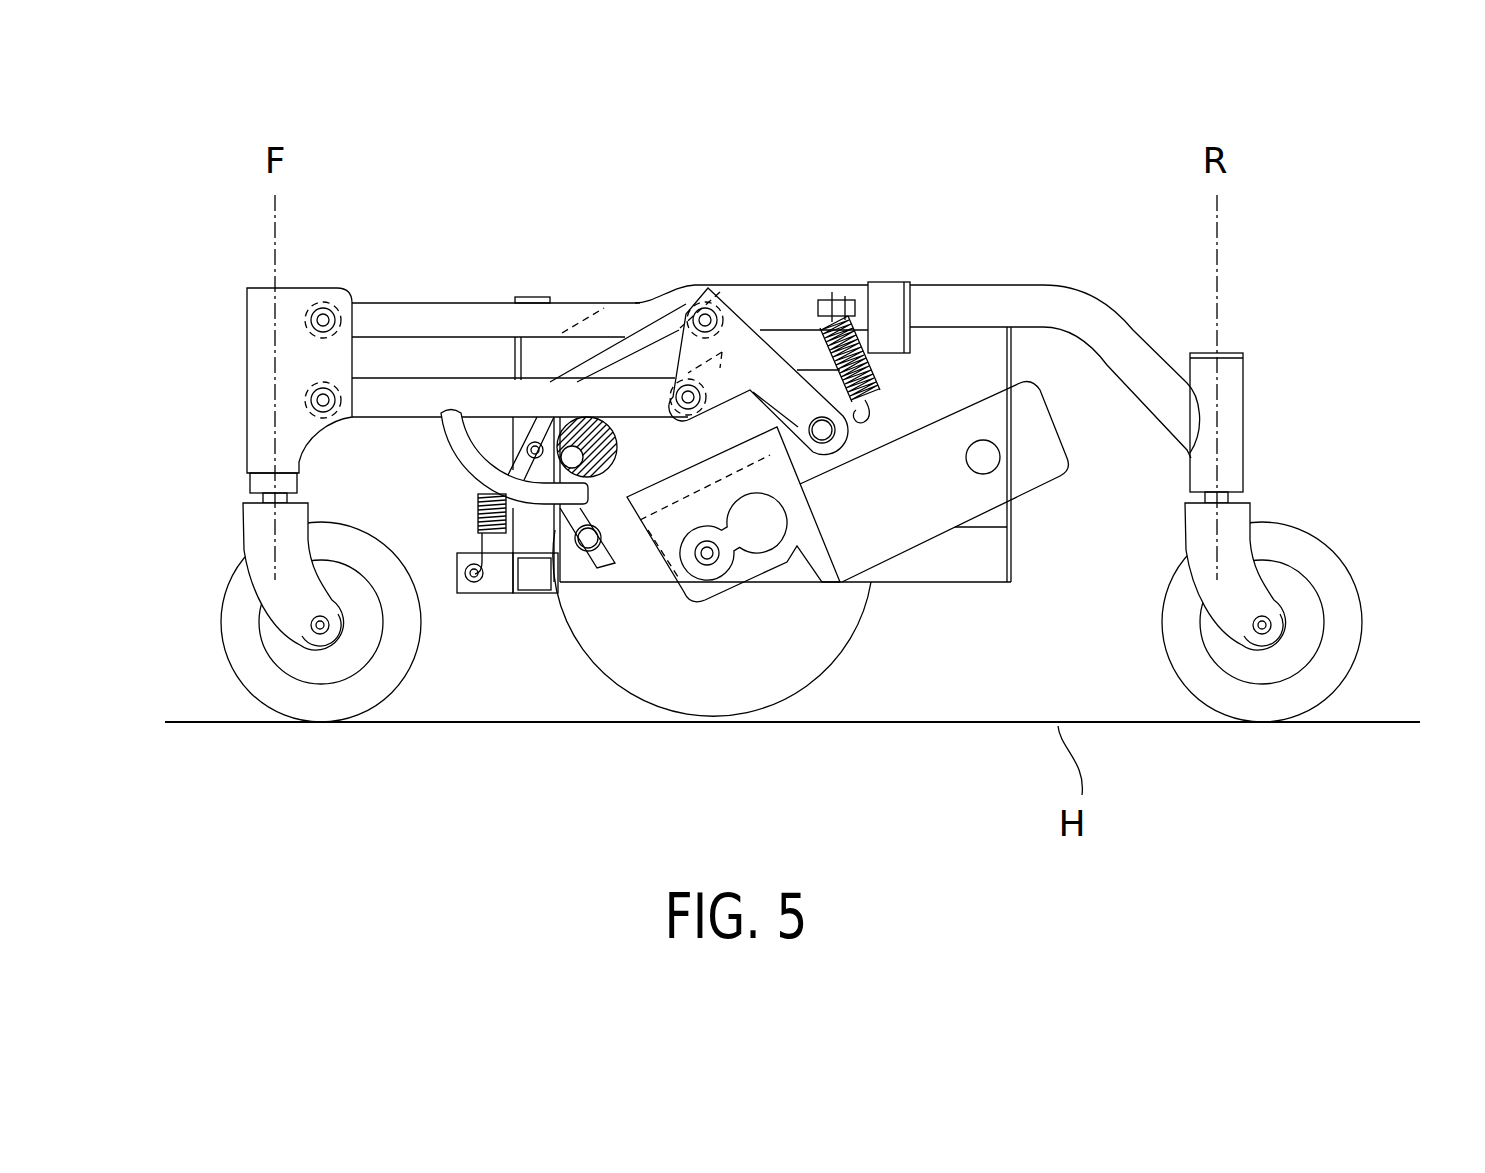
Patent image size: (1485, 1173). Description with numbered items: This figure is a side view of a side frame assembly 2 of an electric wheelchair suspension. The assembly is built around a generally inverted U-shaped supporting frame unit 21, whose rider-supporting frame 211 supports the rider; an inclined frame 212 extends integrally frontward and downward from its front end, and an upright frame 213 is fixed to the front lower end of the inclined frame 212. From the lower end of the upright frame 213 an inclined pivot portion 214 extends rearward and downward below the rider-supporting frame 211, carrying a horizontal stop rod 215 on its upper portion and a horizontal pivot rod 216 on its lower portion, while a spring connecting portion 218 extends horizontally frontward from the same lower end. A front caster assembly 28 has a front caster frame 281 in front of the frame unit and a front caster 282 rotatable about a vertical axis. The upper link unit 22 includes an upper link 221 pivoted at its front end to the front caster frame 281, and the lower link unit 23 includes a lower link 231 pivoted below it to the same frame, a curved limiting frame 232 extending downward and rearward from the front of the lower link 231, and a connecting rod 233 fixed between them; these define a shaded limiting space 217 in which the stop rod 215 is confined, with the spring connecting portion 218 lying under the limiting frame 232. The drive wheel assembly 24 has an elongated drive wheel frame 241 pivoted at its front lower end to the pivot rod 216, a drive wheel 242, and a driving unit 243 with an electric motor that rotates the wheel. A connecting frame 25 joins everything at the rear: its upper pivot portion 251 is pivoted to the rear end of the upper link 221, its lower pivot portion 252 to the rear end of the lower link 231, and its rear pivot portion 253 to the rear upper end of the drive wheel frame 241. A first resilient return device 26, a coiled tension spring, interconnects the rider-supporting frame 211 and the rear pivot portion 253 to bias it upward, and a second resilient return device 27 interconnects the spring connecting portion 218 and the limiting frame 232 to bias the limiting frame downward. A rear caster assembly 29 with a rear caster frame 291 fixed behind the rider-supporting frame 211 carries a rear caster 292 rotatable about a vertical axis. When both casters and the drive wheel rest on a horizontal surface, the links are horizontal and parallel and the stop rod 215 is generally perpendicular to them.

The side frame assembly 2 is at (1078, 242).
The supporting frame unit 21 is at (990, 272).
The rider-supporting frame 211 is at (803, 298).
The inclined frame 212 is at (600, 340).
The upright frame 213 is at (517, 433).
The inclined pivot portion 214 is at (540, 485).
The horizontal stop rod 215 is at (612, 456).
The horizontal pivot rod 216 is at (618, 578).
The limiting space 217 is at (592, 552).
The spring connecting portion 218 is at (500, 595).
The upper link unit 22 is at (393, 284).
The upper link 221 is at (412, 310).
The lower link unit 23 is at (376, 434).
The lower link 231 is at (376, 392).
The curved limiting frame 232 is at (470, 465).
The connecting rod 233 is at (527, 512).
The drive wheel assembly 24 is at (834, 697).
The drive wheel frame 241 is at (691, 604).
The drive wheel 242 is at (748, 716).
The driving unit 243 is at (912, 557).
The connecting frame 25 is at (878, 437).
The upper pivot portion 251 is at (830, 420).
The lower pivot portion 252 is at (722, 352).
The rear pivot portion 253 is at (822, 415).
The first resilient return device 26 is at (878, 326).
The second resilient return device 27 is at (496, 560).
The front caster assembly 28 is at (225, 300).
The front caster frame 281 is at (256, 288).
The front caster 282 is at (290, 724).
The rear caster assembly 29 is at (1276, 336).
The rear caster frame 291 is at (1233, 387).
The rear caster 292 is at (1350, 607).